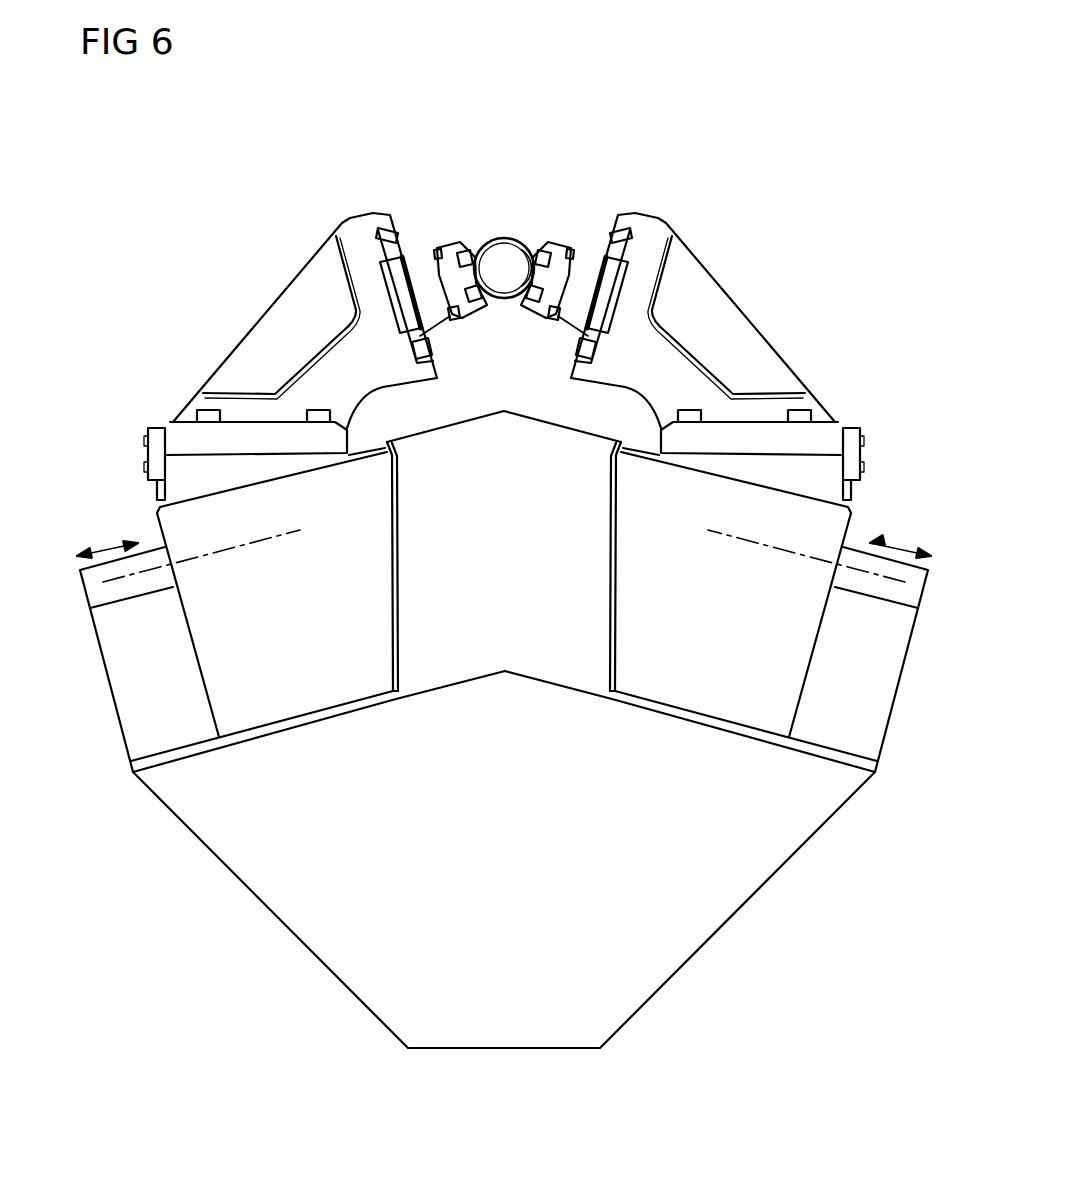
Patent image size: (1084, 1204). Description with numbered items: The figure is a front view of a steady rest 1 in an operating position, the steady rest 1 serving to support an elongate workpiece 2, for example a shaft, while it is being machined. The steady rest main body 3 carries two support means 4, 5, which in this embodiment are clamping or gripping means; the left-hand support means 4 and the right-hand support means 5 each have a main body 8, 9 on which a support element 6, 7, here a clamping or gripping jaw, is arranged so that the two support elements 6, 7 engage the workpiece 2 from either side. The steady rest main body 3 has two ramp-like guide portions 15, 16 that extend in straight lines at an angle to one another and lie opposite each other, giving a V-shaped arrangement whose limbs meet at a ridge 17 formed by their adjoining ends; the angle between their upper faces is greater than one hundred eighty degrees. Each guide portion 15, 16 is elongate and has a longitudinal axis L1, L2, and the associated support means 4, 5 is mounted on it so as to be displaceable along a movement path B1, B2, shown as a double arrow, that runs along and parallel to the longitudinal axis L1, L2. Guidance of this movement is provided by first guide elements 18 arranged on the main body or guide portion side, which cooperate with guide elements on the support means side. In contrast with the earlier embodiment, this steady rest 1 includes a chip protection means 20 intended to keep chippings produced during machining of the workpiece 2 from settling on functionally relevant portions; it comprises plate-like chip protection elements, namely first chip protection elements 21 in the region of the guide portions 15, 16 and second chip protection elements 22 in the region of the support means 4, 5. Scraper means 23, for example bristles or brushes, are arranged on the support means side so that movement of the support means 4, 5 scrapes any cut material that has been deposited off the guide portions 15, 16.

The steady rest 1 is at (226, 190).
The workpiece 2 is at (506, 238).
The steady rest main body 3 is at (706, 945).
The support means 4 is at (246, 308).
The support means 5 is at (762, 308).
The support element 6 is at (432, 216).
The support element 7 is at (568, 216).
The main body 8 is at (203, 520).
The main body 9 is at (818, 513).
The guide portion 15 is at (147, 543).
The guide portion 16 is at (861, 543).
The ridge 17 is at (503, 410).
The first guide elements 18 is at (522, 505).
The chip protection means 20 is at (508, 760).
The first chip protection elements 21 is at (488, 673).
The second chip protection elements 22 is at (320, 688).
The scraper means 23 is at (157, 510).
The movement path B1 is at (102, 548).
The movement path B2 is at (906, 548).
The longitudinal axis L1 is at (108, 583).
The longitudinal axis L2 is at (900, 583).